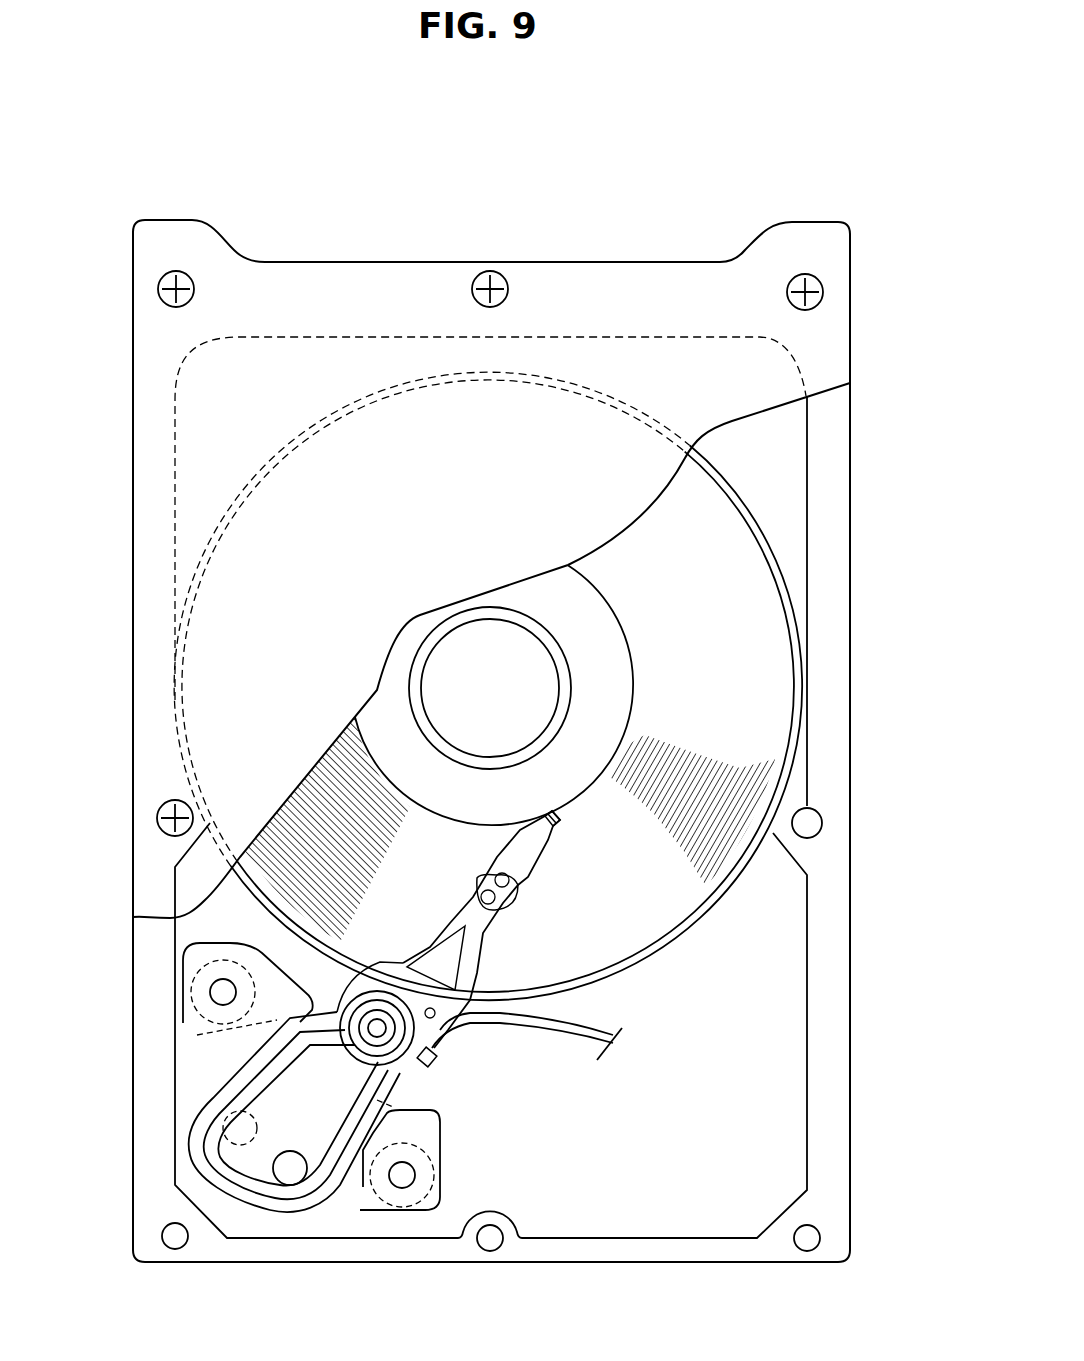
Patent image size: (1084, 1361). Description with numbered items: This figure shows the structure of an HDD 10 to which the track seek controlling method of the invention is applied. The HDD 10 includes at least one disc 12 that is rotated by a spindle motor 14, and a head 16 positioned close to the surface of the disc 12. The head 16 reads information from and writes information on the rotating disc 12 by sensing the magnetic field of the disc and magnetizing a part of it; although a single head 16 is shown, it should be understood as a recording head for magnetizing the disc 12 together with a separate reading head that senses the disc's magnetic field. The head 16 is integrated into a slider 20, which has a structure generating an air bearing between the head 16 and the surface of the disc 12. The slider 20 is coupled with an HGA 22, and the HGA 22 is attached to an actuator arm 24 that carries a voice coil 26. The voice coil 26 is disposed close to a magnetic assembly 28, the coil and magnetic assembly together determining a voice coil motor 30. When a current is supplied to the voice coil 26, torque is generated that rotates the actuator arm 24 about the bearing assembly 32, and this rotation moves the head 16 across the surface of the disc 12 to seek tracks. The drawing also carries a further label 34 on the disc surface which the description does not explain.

The HDD 10 is at (632, 181).
The disc 12 is at (756, 621).
The spindle motor 14 is at (465, 660).
The head 16 is at (560, 823).
The slider 20 is at (545, 842).
The HGA 22 is at (490, 936).
The actuator arm 24 is at (280, 1047).
The voice coil 26 is at (215, 1115).
The magnetic assembly 28 is at (220, 1058).
The voice coil motor (VCM) 30 is at (347, 1187).
The bearing assembly 32 is at (395, 1040).
The hatched disk zone 34 is at (310, 837).